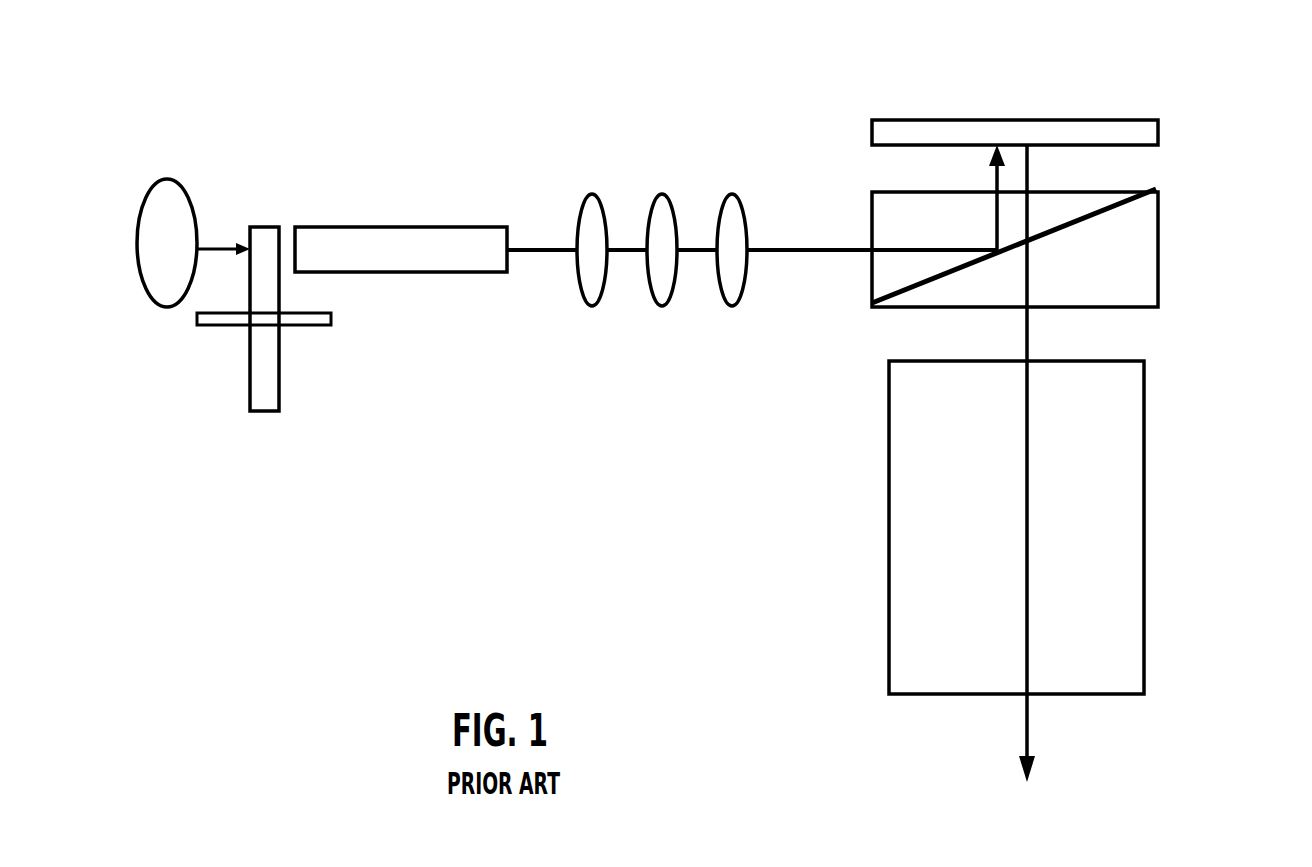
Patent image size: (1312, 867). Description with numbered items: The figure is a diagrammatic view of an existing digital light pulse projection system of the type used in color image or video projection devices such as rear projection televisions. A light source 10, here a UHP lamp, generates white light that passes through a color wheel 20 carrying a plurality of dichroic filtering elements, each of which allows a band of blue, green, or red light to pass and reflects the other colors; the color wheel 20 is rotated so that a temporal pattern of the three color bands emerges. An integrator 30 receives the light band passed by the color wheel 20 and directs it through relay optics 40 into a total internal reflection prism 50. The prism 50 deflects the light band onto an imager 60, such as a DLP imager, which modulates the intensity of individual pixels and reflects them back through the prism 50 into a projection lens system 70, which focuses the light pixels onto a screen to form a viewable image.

The light source 10 is at (138, 177).
The color wheel 20 is at (256, 422).
The integrator 30 is at (408, 215).
The relay optics 40 is at (660, 324).
The total internal reflection (TIR) prism 50 is at (1168, 249).
The imager 60 is at (1027, 112).
The projection lens system 70 is at (1155, 526).